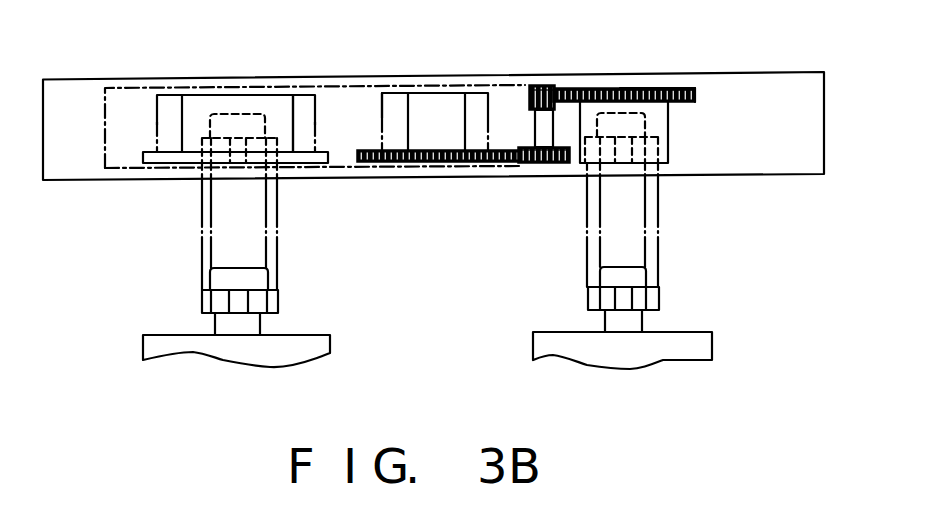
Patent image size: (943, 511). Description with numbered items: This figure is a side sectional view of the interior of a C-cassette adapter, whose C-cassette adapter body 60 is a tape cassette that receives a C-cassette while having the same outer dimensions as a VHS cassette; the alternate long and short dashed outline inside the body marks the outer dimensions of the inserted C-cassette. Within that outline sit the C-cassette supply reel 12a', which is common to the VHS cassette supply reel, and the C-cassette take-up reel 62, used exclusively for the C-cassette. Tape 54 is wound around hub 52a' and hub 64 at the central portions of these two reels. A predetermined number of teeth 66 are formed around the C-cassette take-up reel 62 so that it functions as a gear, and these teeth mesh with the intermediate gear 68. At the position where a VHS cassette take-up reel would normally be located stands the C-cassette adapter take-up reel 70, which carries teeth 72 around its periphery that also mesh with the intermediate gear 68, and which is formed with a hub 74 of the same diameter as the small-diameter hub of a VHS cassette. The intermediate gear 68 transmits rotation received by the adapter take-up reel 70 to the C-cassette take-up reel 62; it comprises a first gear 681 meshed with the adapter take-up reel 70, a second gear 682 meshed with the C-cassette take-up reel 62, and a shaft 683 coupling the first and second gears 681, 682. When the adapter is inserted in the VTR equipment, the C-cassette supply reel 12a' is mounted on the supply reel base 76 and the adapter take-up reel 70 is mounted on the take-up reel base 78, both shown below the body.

The C-cassette supply reel 12a' is at (286, 126).
The hub 52a' is at (236, 96).
The tape 54 is at (307, 93).
The C-cassette adapter body 60 is at (824, 146).
The C-cassette take-up reel 62 is at (369, 148).
The hub 64 is at (456, 93).
The teeth 66 is at (427, 163).
The intermediate gear 68 is at (556, 164).
The first gear 681 is at (553, 89).
The second gear 682 is at (548, 164).
The shaft 683 is at (533, 128).
The C-cassette adapter take-up reel 70 is at (696, 96).
The teeth 72 is at (647, 88).
The hub 74 is at (668, 148).
The supply reel base 76 is at (330, 343).
The take-up reel base 78 is at (712, 343).